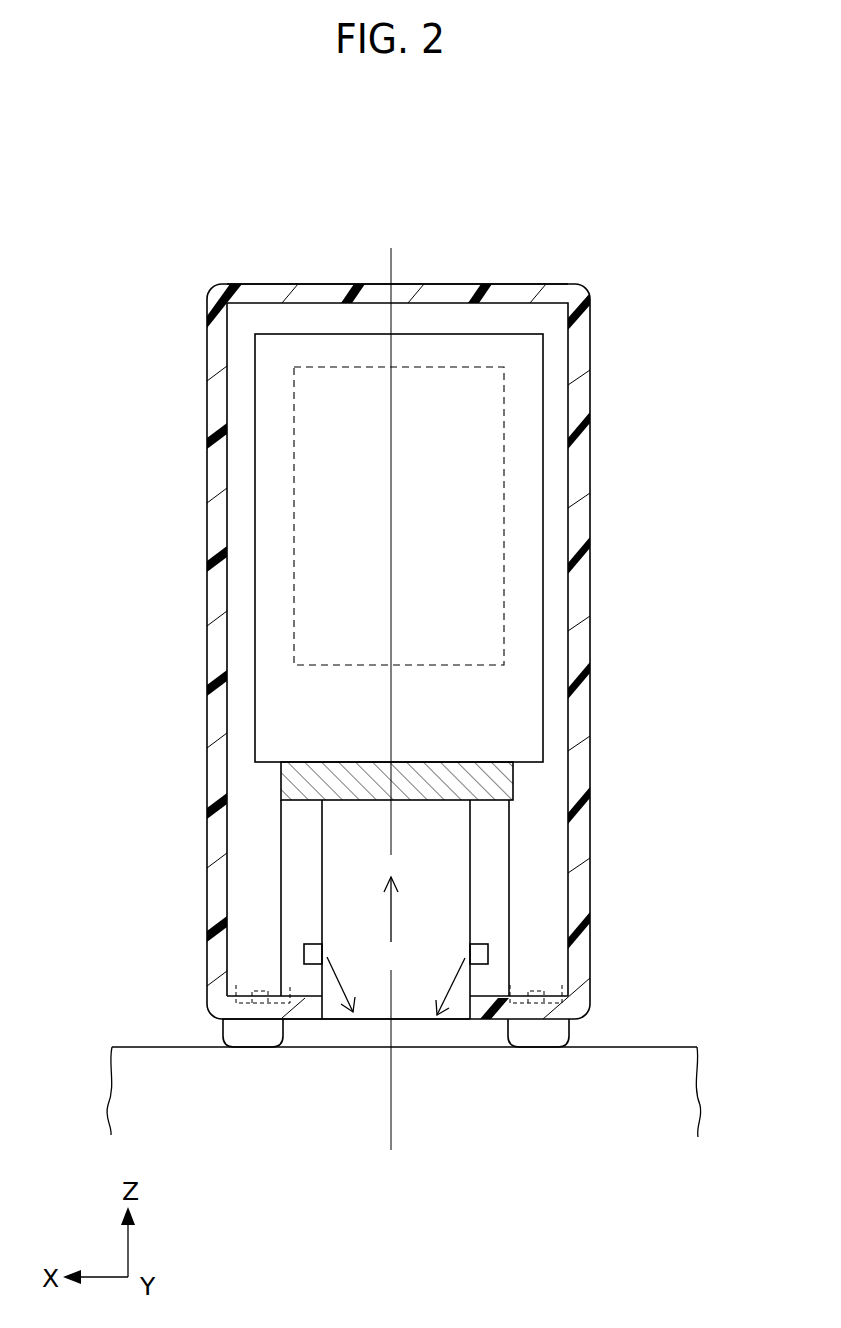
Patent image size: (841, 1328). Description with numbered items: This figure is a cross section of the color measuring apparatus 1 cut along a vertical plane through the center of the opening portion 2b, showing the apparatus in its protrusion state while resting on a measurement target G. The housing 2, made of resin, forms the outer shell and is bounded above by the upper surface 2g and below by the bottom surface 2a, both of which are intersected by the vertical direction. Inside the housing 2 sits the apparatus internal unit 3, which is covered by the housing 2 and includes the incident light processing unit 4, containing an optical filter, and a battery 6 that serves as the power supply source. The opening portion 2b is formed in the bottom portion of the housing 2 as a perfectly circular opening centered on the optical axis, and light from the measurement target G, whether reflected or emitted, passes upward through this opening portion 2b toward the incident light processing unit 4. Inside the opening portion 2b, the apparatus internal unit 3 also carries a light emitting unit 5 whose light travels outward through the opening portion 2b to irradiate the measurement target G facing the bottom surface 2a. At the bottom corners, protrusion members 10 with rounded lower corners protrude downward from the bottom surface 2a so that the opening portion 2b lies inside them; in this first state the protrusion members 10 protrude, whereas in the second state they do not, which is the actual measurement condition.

The color measuring apparatus 1 is at (431, 202).
The housing 2 is at (590, 411).
The upper surface 2g is at (448, 285).
The bottom surface 2a is at (303, 1023).
The opening portion 2b is at (412, 1030).
The apparatus internal unit 3 is at (272, 468).
The incident light processing unit 4 is at (457, 772).
The light emitting unit 5 is at (304, 953).
The battery 6 is at (504, 566).
The protrusion member 10 is at (235, 1048).
The measurement target G is at (132, 1046).